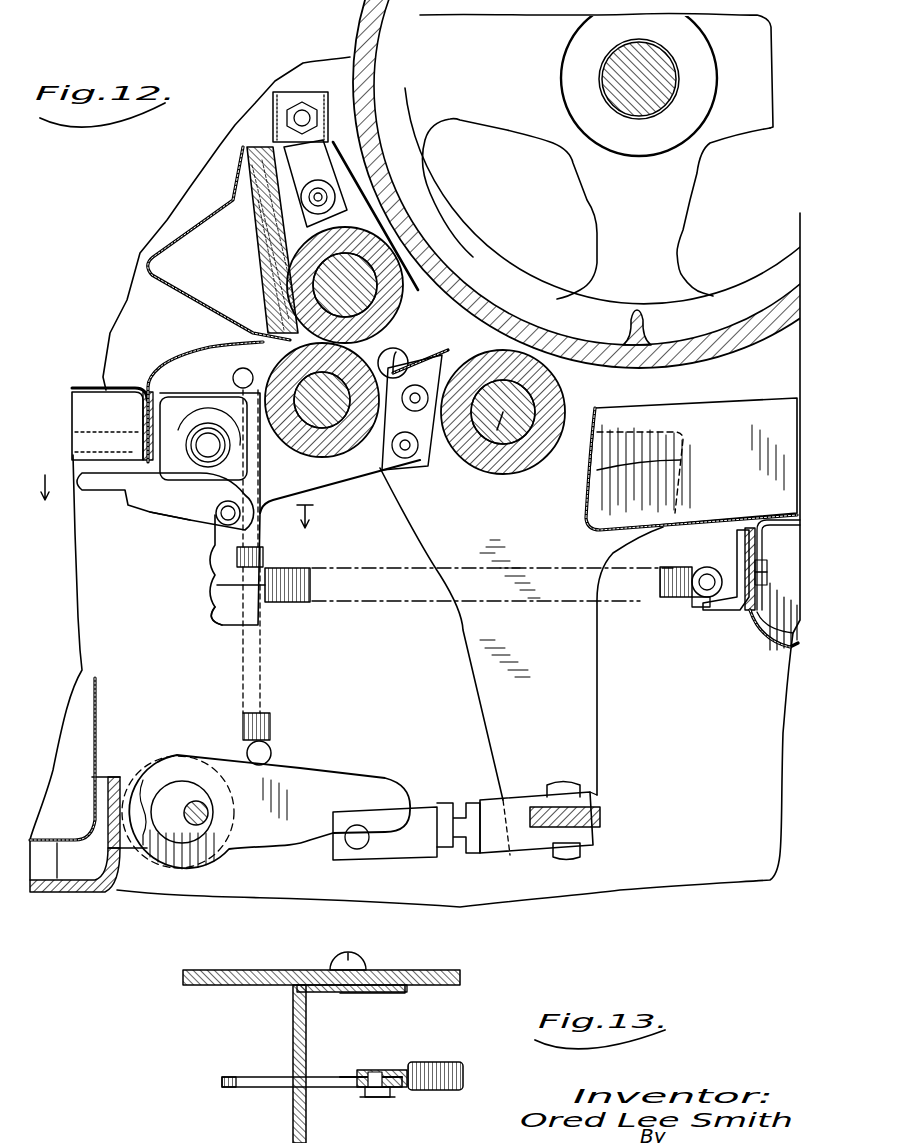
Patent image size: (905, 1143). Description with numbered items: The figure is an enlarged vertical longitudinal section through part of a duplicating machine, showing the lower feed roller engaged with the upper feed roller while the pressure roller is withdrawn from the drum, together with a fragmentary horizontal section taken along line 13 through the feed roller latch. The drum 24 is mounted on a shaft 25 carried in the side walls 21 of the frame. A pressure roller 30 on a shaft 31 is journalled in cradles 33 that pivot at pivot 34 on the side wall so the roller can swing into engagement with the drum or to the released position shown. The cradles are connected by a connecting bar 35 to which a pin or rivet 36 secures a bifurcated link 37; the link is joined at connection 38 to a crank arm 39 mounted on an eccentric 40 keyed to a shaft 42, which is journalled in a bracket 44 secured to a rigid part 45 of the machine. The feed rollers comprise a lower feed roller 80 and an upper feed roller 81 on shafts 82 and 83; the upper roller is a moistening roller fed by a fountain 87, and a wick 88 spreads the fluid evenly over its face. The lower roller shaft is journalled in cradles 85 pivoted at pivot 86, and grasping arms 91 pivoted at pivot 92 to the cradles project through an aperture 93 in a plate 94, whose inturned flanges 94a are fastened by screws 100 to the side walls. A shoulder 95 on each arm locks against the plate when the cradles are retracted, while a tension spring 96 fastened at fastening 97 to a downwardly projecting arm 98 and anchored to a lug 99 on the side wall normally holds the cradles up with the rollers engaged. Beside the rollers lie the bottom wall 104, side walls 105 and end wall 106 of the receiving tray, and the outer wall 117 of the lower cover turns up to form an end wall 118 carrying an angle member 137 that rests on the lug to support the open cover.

In FIG. 12, the drum 24 is at (355, 32).
In FIG. 12, the shaft 25 is at (605, 75).
In FIG. 12, the pressure roller 30 is at (563, 393).
In FIG. 12, the shaft 31 is at (473, 470).
In FIG. 12, the cradles 33 is at (482, 623).
In FIG. 12, the pivot 34 is at (400, 352).
In FIG. 12, the connecting bar 35 is at (602, 815).
In FIG. 12, the pin or rivet 36 is at (565, 782).
In FIG. 12, the bifurcated link 37 is at (535, 838).
In FIG. 12, the connection 38 is at (345, 838).
In FIG. 12, the crank arm 39 is at (328, 780).
In FIG. 12, the eccentric 40 is at (187, 840).
In FIG. 12, the shaft 42 is at (194, 805).
In FIG. 12, the bracket 44 is at (128, 860).
In FIG. 12, the rigid part 45 is at (62, 893).
In FIG. 12, the lower feed roller 80 is at (347, 443).
In FIG. 12, the upper feed roller 81 is at (290, 253).
In FIG. 12, the shaft 82 is at (313, 417).
In FIG. 12, the shaft 83 is at (322, 278).
In FIG. 12, the cradles 85 is at (390, 473).
In FIG. 12, the pivot 86 is at (200, 440).
In FIG. 12, the fountain 87 is at (305, 183).
In FIG. 12, the wick 88 is at (265, 228).
In FIG. 12, the grasping arms 91 is at (130, 497).
In FIG. 13, the grasping arms 91 is at (237, 1087).
In FIG. 12, the pivot 92 is at (222, 522).
In FIG. 13, the pivot 92 is at (377, 1097).
In FIG. 12, the aperture 93 is at (157, 467).
In FIG. 13, the aperture 93 is at (307, 1072).
In FIG. 12, the plate 94 is at (142, 414).
In FIG. 13, the plate 94 is at (292, 1013).
In FIG. 12, the inturned flanges 94a is at (187, 393).
In FIG. 13, the inturned flanges 94a is at (383, 992).
In FIG. 12, the shoulder 95 is at (190, 513).
In FIG. 12, the tension spring 96 is at (300, 603).
In FIG. 13, the tension spring 96 is at (445, 1062).
In FIG. 12, the fastening 97 is at (212, 590).
In FIG. 12, the arm 98 is at (212, 612).
In FIG. 13, the arm 98 is at (393, 1068).
In FIG. 12, the lug 99 is at (707, 597).
In FIG. 13, the screws 100 is at (368, 963).
In FIG. 12, the bottom wall 104 is at (650, 525).
In FIG. 12, the side walls 105 is at (722, 412).
In FIG. 12, the end wall 106 is at (640, 465).
In FIG. 12, the bottom or outer wall 117 is at (790, 667).
In FIG. 12, the end wall 118 is at (772, 652).
In FIG. 12, the angle member 137 is at (745, 612).
In FIG. 12, the section line 13- 13 is at (180, 488).
In FIG. 13, the side walls 21 is at (460, 965).